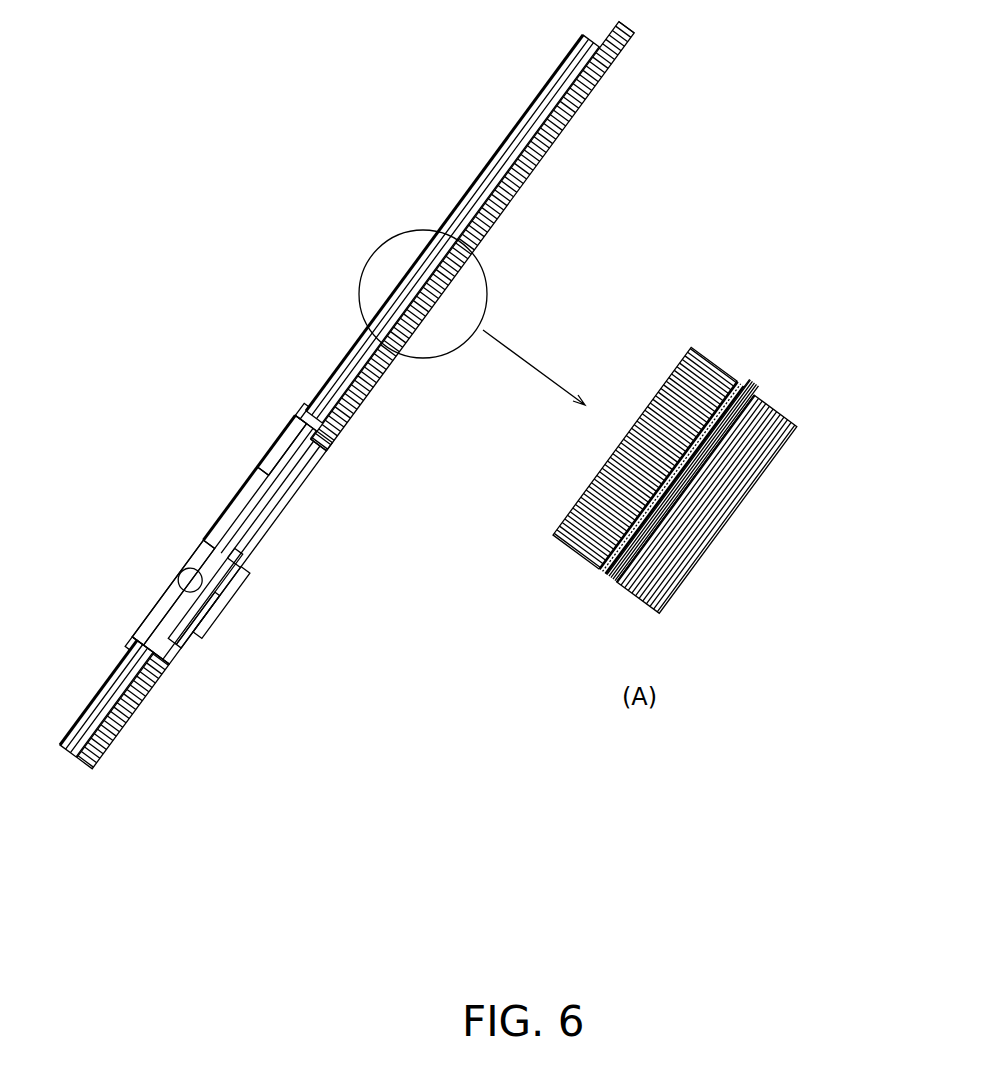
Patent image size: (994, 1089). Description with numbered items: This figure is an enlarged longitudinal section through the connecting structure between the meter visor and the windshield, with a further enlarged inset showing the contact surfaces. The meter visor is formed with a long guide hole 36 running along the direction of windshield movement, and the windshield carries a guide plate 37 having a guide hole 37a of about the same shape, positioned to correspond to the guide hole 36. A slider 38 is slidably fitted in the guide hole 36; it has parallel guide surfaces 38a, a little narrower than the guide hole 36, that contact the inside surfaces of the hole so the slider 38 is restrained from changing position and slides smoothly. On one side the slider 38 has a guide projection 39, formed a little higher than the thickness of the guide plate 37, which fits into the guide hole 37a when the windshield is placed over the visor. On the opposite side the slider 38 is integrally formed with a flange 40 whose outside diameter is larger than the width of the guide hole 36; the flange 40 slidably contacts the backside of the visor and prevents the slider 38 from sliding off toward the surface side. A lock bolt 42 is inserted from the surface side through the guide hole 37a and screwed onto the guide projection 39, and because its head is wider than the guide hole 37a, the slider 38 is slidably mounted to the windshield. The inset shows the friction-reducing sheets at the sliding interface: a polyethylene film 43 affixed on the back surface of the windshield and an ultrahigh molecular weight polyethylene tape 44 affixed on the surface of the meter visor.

The guide hole 36 is at (311, 458).
The guide plate 37 is at (290, 420).
The guide hole 37a is at (282, 478).
The slider 38 is at (237, 556).
The guide surface 38a is at (215, 600).
The guide projection 39 is at (205, 545).
The flange 40 is at (245, 585).
The lock bolt 42 is at (183, 578).
The polyethylene film 43 is at (710, 392).
The ultrahigh molecular weight polyethylene tape 44 is at (735, 420).